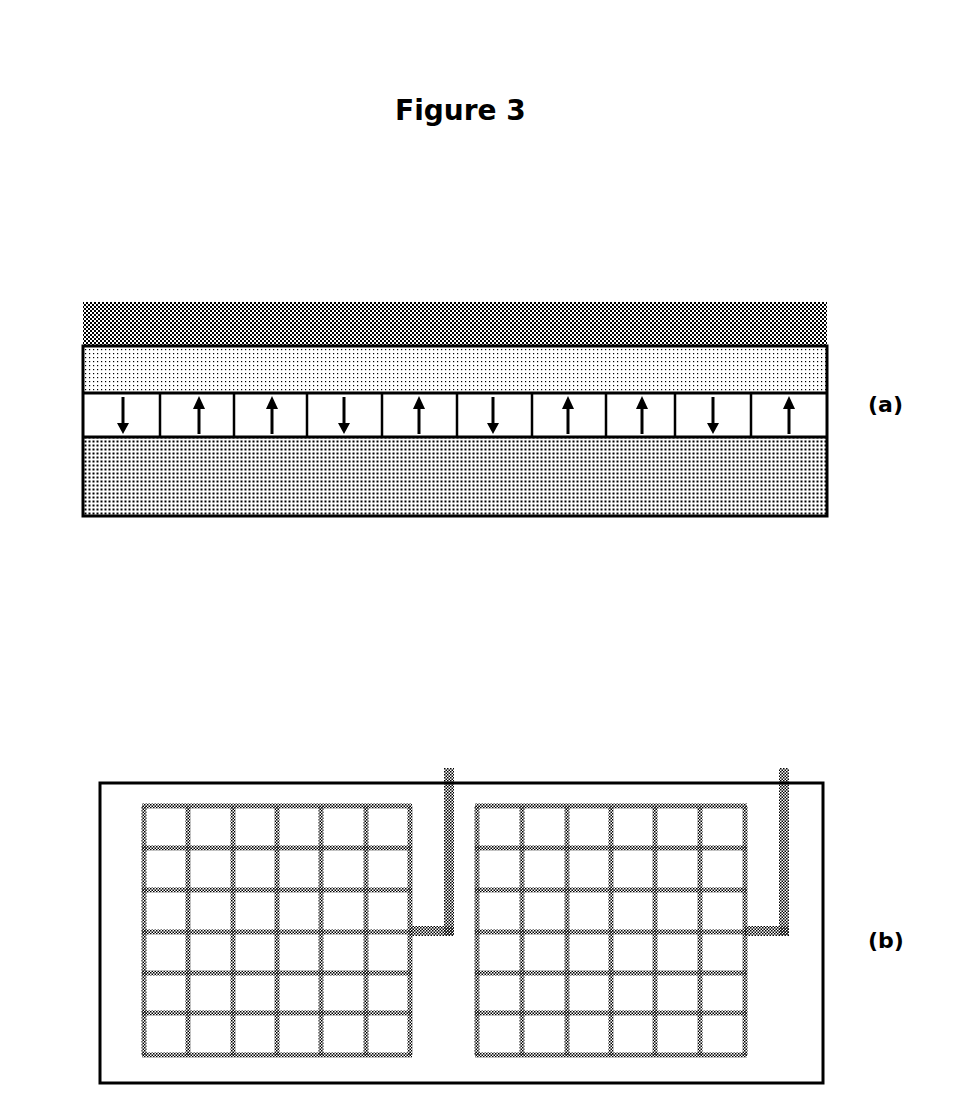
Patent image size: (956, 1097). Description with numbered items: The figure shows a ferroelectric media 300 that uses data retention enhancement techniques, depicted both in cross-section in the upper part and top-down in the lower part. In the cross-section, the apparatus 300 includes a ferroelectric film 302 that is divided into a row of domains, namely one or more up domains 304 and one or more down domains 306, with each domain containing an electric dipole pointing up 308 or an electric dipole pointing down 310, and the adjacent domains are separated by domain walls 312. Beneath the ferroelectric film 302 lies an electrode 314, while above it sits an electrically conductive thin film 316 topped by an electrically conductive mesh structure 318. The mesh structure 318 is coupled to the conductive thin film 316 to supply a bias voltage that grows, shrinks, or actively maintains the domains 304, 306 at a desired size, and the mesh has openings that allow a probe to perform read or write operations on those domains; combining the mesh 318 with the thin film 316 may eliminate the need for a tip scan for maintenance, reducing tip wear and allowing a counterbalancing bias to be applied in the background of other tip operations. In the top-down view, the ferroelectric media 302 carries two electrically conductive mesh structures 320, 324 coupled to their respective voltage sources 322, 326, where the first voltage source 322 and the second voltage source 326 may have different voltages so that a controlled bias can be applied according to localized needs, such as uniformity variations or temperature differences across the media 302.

The ferroelectric media 300 is at (692, 206).
The ferroelectric film 302 is at (81, 395).
The up domain 304 is at (813, 420).
The down domain 306 is at (737, 412).
The electric dipole pointing up 308 is at (791, 425).
The electric dipole pointing down 310 is at (720, 413).
The domain wall 312 is at (680, 410).
The electrode 314 is at (353, 490).
The electrically conductive thin film 316 is at (353, 382).
The electrically conductive mesh structure 318 is at (353, 335).
The electrically conductive mesh structure 320 is at (273, 805).
The voltage source V1 322 is at (447, 783).
The electrically conductive mesh structure 324 is at (612, 805).
The voltage source V2 326 is at (782, 783).